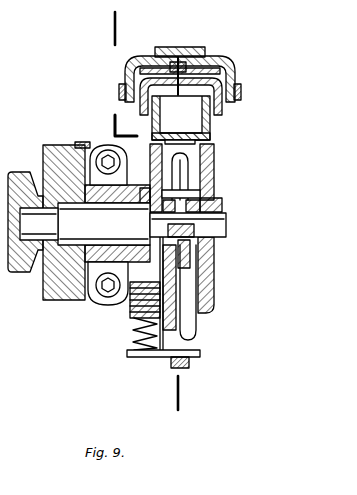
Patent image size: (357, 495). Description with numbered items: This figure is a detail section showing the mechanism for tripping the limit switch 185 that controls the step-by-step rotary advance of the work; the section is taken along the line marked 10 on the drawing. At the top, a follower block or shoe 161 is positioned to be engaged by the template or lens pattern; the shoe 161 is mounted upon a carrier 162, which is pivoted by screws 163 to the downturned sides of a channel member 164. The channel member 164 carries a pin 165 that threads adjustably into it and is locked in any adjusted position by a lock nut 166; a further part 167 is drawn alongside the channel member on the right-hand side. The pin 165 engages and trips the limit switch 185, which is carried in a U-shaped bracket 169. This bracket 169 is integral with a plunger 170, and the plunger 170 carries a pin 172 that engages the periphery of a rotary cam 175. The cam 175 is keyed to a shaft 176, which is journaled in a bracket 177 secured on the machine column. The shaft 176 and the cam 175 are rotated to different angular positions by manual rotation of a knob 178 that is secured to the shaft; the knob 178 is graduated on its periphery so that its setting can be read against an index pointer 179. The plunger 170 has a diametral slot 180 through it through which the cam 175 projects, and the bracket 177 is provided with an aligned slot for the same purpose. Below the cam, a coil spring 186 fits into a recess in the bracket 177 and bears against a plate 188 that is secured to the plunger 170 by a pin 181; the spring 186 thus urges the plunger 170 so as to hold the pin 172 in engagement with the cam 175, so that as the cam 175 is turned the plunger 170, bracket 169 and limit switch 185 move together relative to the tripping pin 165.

The section line indicator 10 is at (108, 28).
The follower block or shoe 161 is at (177, 47).
The carrier 162 is at (228, 71).
The screws 163 is at (119, 91).
The channel member 164 is at (223, 103).
The pin 165 is at (181, 57).
The lock nut 166 is at (152, 66).
The right side block 167 is at (240, 88).
The U-shaped bracket 169 is at (211, 140).
The plunger 170 is at (189, 166).
The pin 172 is at (201, 194).
The rotary cam 175 is at (191, 256).
The shaft 176 is at (227, 226).
The bracket 177 is at (207, 287).
The knob 178 is at (52, 292).
The index pointer 179 is at (82, 142).
The diametral slot 180 is at (193, 327).
The pin 181 is at (190, 365).
The limit switch 185 is at (200, 124).
The coil spring 186 is at (133, 326).
The plate 188 is at (127, 354).